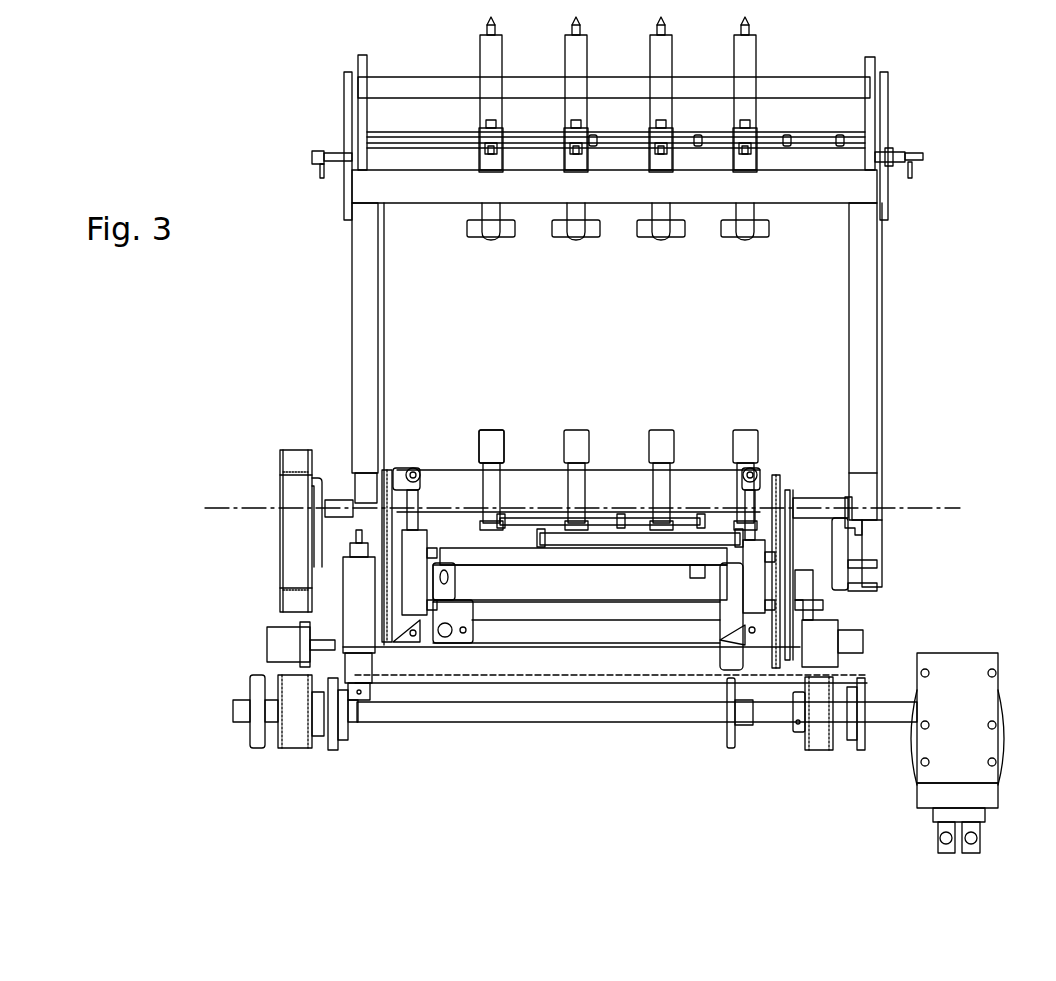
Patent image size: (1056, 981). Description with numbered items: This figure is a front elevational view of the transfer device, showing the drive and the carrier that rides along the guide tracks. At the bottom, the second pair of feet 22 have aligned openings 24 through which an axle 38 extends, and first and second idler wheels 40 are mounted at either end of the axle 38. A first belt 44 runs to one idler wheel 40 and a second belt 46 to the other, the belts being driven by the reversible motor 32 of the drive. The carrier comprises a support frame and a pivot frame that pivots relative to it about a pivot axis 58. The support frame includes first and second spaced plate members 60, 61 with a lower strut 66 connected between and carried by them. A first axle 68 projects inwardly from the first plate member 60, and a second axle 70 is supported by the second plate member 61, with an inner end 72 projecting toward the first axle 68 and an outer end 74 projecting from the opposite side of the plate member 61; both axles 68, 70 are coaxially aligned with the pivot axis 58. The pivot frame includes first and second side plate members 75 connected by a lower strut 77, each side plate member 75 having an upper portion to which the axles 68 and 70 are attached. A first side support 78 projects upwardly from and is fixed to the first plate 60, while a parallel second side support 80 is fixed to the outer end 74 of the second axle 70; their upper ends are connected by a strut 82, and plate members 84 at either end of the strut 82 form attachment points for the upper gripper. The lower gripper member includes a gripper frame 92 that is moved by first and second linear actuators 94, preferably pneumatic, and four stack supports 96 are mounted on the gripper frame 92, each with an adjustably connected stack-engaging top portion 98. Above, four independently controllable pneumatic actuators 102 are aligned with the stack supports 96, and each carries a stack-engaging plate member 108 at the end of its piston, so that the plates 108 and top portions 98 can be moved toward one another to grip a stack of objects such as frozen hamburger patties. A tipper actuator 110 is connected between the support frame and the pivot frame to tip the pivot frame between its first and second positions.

The second pair of feet 22 is at (337, 745).
The aligned openings 24 is at (327, 715).
The motor 32 is at (990, 694).
The axle 38 is at (523, 723).
The idler wheels 40 is at (278, 748).
The first belt 44 is at (287, 745).
The second belt 46 is at (820, 745).
The pivot axis 58 is at (213, 506).
The first plate member 60 is at (310, 579).
The second plate member 61 is at (812, 620).
The lower strut 66 is at (437, 693).
The first axle 68 is at (342, 503).
The second axle 70 is at (828, 498).
The inner end 72 is at (789, 490).
The outer end 74 is at (850, 502).
The side plate members 75 is at (390, 470).
The lower strut 77 is at (625, 608).
The first side support 78 is at (352, 333).
The second side support 80 is at (878, 340).
The strut 82 is at (876, 197).
The plate members 84 is at (345, 102).
The gripper frame 92 is at (708, 478).
The linear actuators 94 is at (437, 592).
The stack supports 96 is at (502, 478).
The stack-engaging top portion 98 is at (490, 430).
The pneumatic actuators 102 is at (582, 57).
The stack-engaging plate member 108 is at (508, 239).
The tipper actuator 110 is at (350, 624).